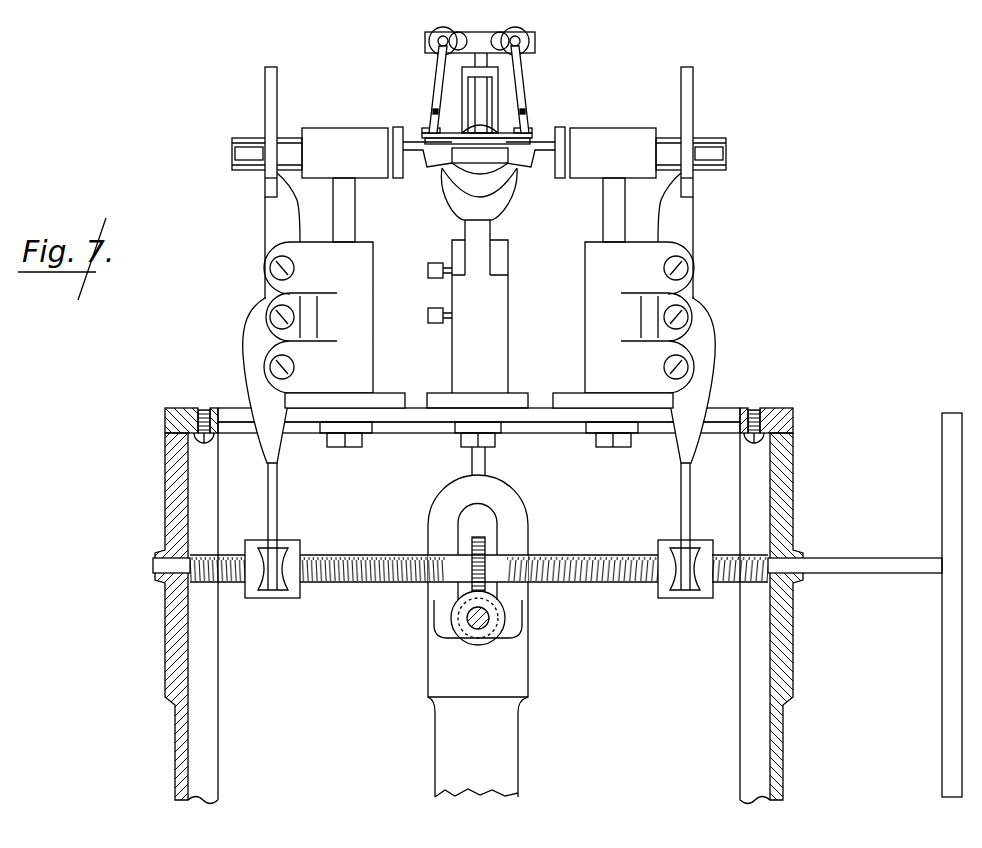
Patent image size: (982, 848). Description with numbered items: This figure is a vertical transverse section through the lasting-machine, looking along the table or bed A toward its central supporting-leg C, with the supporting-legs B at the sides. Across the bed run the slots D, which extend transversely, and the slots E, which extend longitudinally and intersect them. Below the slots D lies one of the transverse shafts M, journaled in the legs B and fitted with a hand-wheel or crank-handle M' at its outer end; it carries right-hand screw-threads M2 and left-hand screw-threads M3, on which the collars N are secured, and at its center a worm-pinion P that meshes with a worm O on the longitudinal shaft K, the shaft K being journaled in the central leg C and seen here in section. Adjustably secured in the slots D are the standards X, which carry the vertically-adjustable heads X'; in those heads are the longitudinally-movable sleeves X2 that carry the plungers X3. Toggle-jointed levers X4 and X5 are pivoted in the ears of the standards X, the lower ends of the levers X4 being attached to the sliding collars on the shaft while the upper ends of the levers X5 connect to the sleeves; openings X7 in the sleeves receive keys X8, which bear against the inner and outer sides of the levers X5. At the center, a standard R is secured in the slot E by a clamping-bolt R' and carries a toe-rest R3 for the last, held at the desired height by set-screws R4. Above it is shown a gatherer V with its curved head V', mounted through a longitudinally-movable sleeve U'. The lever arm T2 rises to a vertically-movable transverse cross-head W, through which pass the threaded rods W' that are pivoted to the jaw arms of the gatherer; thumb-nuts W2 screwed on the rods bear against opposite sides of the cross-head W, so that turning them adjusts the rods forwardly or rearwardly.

The arm T2 is at (475, 62).
The thumb-nuts W2 is at (448, 43).
The cross-head W is at (503, 88).
The rods W' is at (490, 89).
The plungers X3 is at (423, 140).
The toggle-jointed levers X5 is at (277, 83).
The openings X7 is at (250, 147).
The sleeves X2 is at (232, 152).
The heads X' is at (479, 185).
The keys X8 is at (252, 158).
The gatherers V is at (480, 155).
The curved heads V' is at (496, 179).
The sleeves U' is at (469, 194).
The toe-rests R3 is at (477, 247).
The set-screws R4 is at (428, 316).
The standards R is at (477, 324).
The standards X is at (479, 325).
The toggle-jointed levers X4 is at (242, 338).
The table or bed A is at (165, 410).
The slots D is at (245, 415).
The slots E is at (497, 413).
The clamping-bolts R' is at (492, 461).
The collars N is at (283, 598).
The shafts M is at (547, 559).
The left-hand screw-threads M3 is at (372, 577).
The right-hand screw-threads M2 is at (618, 577).
The hand-wheels or crank-handles M' is at (939, 605).
The shafts K is at (467, 620).
The worm-pinions P is at (476, 554).
The worms O is at (480, 640).
The supporting-legs B is at (163, 650).
The supporting-leg C is at (478, 636).